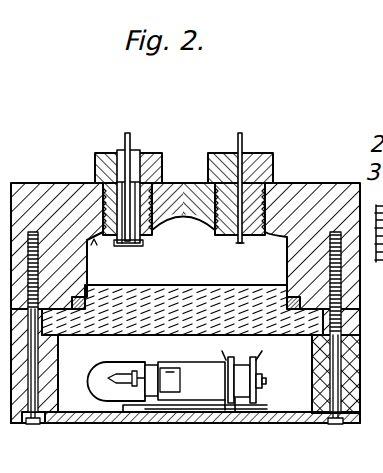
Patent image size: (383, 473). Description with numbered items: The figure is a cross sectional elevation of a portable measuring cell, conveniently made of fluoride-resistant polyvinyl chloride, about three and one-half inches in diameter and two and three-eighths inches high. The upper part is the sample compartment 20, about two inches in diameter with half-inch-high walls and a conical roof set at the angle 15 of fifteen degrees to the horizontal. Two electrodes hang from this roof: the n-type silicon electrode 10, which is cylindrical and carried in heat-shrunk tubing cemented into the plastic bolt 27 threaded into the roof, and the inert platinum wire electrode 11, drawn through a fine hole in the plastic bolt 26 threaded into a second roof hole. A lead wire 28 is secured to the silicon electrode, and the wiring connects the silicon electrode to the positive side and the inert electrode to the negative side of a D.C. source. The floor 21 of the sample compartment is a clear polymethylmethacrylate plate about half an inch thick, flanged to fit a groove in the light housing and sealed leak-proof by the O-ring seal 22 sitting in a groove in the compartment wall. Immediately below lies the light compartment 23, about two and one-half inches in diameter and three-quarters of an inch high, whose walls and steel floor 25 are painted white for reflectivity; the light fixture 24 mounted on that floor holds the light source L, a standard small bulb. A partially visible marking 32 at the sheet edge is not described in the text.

The n-type silicon electrode 10 is at (146, 257).
The inert electrode 11 is at (221, 258).
The conical roof angle 15 is at (62, 195).
The sample compartment 20 is at (197, 279).
The floor 21 is at (183, 371).
The O-ring seal 22 is at (204, 328).
The light compartment 23 is at (168, 403).
The light fixture 24 is at (205, 404).
The steel floor 25 is at (192, 431).
The plastic bolt 26 is at (267, 169).
The plastic bolt 27 is at (107, 179).
The lead wire 28 is at (110, 164).
The adjacent part 32 is at (372, 89).
The light source L is at (111, 417).